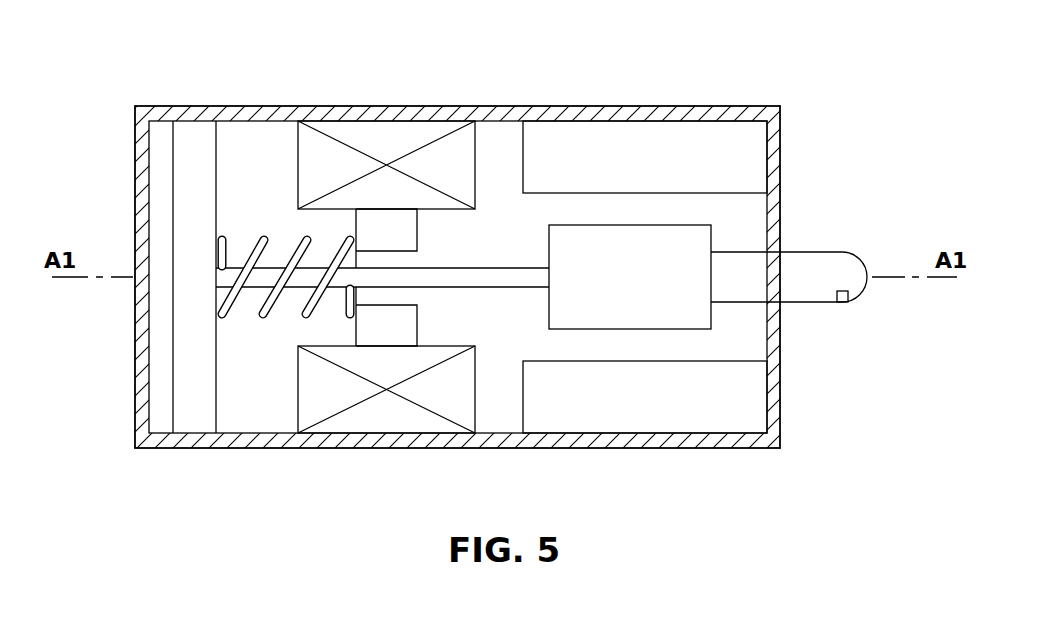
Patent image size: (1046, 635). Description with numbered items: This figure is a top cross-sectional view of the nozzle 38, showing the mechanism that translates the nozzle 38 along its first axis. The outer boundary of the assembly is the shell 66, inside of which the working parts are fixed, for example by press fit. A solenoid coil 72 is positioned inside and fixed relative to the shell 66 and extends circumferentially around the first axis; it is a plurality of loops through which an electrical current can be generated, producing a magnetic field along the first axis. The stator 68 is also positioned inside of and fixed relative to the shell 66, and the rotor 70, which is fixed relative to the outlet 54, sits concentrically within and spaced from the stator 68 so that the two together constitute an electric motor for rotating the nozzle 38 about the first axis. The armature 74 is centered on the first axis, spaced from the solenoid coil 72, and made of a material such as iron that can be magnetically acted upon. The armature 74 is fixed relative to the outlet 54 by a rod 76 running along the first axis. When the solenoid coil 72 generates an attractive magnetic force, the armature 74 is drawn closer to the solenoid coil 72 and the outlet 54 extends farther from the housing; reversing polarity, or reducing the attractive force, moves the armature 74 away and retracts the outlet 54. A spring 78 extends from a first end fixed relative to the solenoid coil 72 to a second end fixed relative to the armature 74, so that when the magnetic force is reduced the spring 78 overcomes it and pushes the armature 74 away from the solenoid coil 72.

The nozzle 38 is at (236, 96).
The outlet 54 is at (845, 303).
The shell 66 is at (380, 106).
The stator 68 is at (718, 395).
The rotor 70 is at (623, 307).
The solenoid coil 72 is at (460, 163).
The armature 74 is at (200, 160).
The rod 76 is at (479, 267).
The spring 78 is at (268, 318).